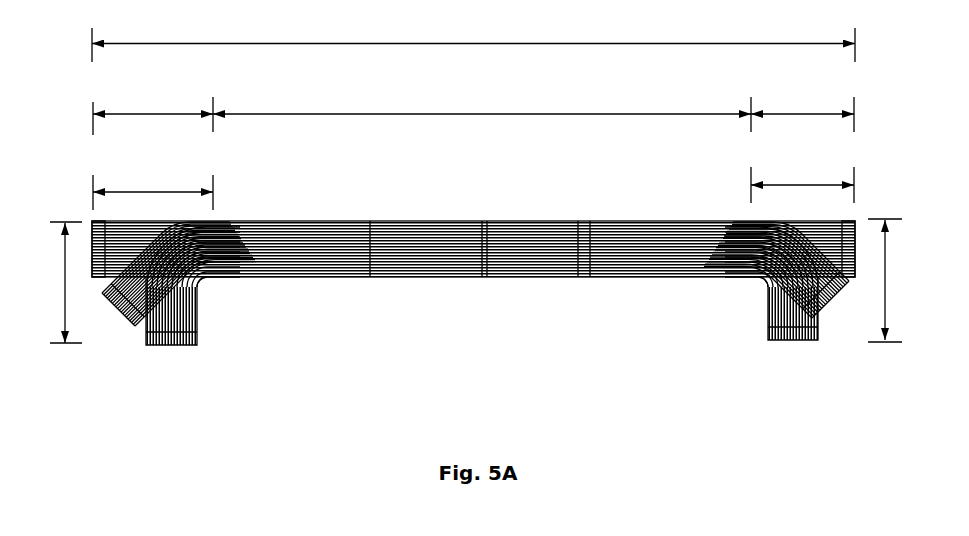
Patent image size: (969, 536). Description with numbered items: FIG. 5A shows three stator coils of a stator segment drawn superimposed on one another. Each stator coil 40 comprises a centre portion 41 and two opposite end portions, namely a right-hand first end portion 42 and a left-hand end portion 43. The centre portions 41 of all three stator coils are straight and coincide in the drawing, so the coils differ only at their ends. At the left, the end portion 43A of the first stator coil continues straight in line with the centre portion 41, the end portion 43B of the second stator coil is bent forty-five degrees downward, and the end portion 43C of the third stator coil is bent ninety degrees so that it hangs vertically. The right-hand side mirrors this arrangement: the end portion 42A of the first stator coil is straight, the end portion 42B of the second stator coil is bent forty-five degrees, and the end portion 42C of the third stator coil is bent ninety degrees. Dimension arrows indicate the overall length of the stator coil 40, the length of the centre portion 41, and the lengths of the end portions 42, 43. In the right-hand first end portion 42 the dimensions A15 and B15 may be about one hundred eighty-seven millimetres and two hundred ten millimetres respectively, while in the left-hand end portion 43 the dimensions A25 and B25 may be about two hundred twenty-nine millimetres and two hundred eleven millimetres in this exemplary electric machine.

The stator coil 40 is at (473, 37).
The centre portion 41 is at (482, 107).
The right-hand first end portion 42 is at (802, 107).
The left-hand end portion 43 is at (153, 108).
The dimension of left-hand end portion A25 is at (153, 188).
The dimension of right-hand first end portion A15 is at (802, 175).
The dimension of left-hand end portion B25 is at (50, 282).
The dimension of right-hand first end portion B15 is at (901, 280).
The straight end portion of first stator coil 43A is at (88, 218).
The bent end portion of second stator coil 43B is at (115, 317).
The bent end portion of third stator coil 43C is at (175, 353).
The straight end portion of first stator coil 42A is at (859, 213).
The bent end portion of second stator coil 42B is at (840, 312).
The bent end portion of third stator coil 42C is at (793, 345).